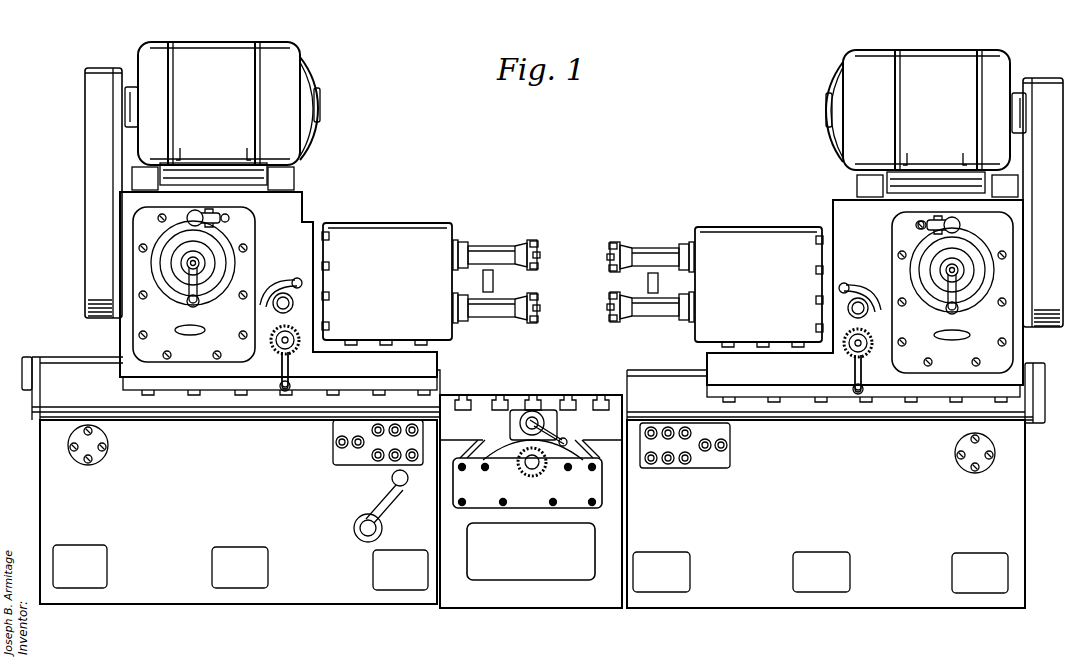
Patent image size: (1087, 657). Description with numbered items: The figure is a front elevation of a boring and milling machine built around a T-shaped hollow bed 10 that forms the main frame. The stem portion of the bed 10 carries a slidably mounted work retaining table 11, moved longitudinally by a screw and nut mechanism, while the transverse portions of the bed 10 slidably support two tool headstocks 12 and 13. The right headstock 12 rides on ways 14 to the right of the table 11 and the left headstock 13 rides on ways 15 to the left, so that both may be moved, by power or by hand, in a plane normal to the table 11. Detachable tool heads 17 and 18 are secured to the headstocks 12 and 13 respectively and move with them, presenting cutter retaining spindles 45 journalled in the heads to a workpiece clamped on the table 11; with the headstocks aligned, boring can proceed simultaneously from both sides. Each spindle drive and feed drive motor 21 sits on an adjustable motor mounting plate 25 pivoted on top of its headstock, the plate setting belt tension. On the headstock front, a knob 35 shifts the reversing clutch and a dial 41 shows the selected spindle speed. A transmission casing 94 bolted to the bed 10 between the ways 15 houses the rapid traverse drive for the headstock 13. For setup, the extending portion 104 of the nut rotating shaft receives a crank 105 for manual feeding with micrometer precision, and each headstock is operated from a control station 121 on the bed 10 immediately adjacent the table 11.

The bed 10 is at (507, 594).
The table 11 is at (510, 397).
The headstock 12 is at (832, 215).
The headstock 13 is at (320, 212).
The ways 14 is at (651, 375).
The ways 15 is at (54, 371).
The tool head 17 is at (726, 238).
The tool head 18 is at (426, 232).
The spindle drive and feed drive motor 21 is at (283, 57).
The motor mounting plate 25 is at (255, 186).
The knob 35 is at (183, 334).
The dial 41 is at (212, 222).
The cutter retaining spindles 45 is at (478, 238).
The transmission casing 94 is at (61, 356).
The extending portion of the nut rotating shaft 104 is at (293, 347).
The crank 105 is at (289, 373).
The control station 121 is at (330, 446).